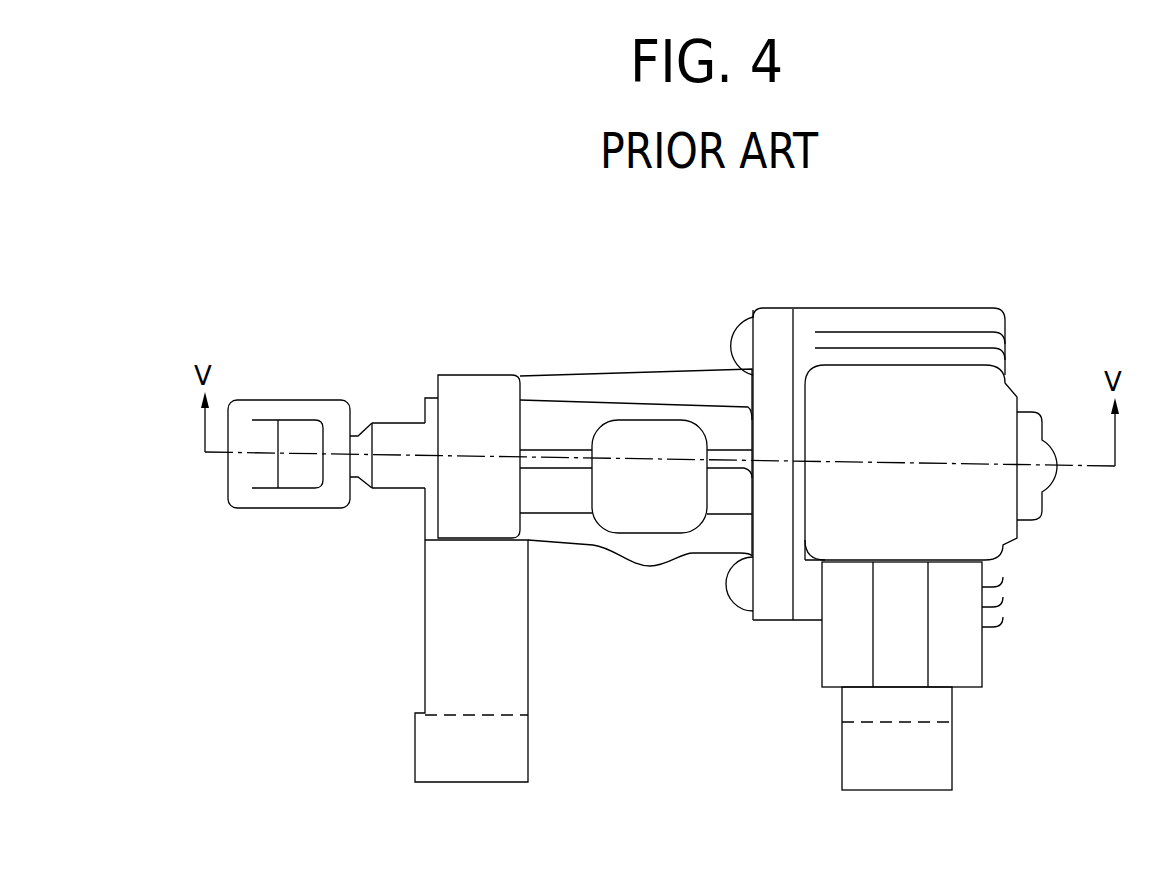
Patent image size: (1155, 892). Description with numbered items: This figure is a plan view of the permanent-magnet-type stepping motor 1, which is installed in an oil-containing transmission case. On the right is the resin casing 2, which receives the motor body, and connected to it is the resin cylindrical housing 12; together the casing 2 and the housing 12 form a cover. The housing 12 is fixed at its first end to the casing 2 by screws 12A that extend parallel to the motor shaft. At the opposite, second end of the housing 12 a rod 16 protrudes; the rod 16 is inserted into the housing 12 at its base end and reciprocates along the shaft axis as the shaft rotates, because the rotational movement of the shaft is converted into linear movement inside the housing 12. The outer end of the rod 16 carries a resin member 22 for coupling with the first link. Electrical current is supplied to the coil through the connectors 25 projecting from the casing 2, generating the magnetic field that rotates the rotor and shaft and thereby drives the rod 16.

The stepping motor 1 is at (951, 298).
The resin casing 2 is at (1006, 328).
The resin cylindrical housing 12 is at (570, 374).
The screws 12A is at (733, 328).
The rod 16 is at (397, 423).
The resin member 22 is at (318, 398).
The connectors 25 is at (968, 660).